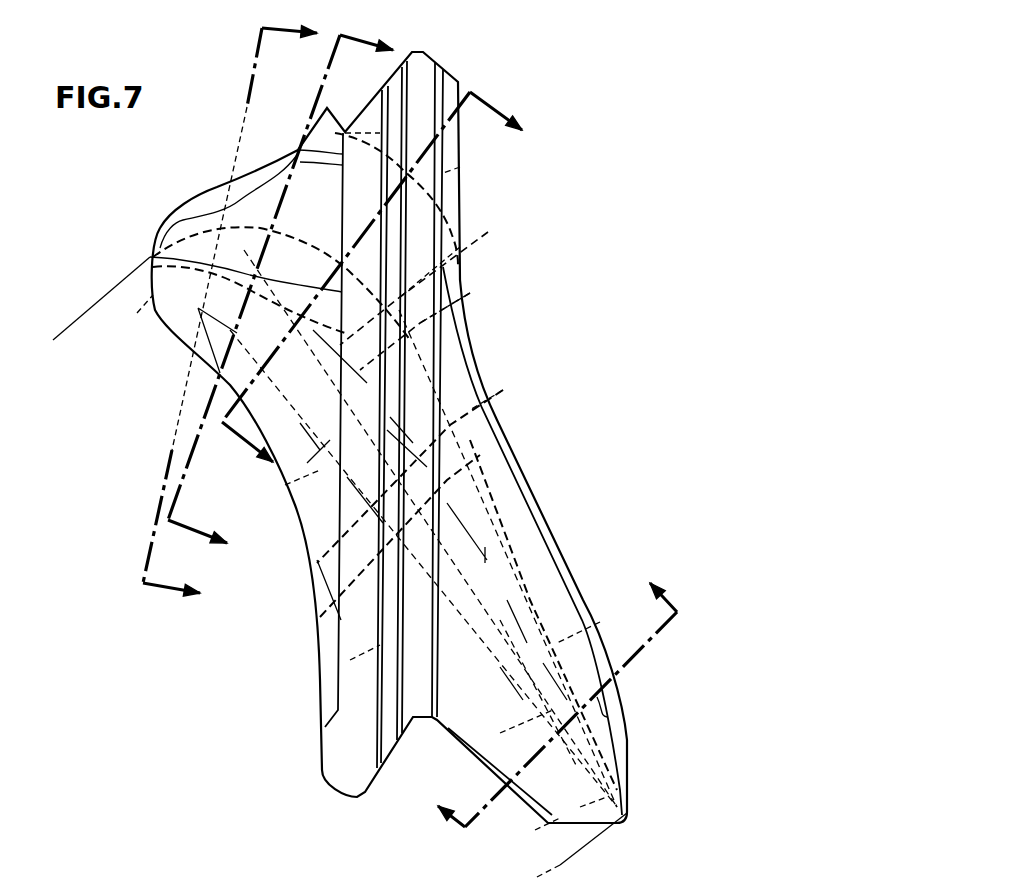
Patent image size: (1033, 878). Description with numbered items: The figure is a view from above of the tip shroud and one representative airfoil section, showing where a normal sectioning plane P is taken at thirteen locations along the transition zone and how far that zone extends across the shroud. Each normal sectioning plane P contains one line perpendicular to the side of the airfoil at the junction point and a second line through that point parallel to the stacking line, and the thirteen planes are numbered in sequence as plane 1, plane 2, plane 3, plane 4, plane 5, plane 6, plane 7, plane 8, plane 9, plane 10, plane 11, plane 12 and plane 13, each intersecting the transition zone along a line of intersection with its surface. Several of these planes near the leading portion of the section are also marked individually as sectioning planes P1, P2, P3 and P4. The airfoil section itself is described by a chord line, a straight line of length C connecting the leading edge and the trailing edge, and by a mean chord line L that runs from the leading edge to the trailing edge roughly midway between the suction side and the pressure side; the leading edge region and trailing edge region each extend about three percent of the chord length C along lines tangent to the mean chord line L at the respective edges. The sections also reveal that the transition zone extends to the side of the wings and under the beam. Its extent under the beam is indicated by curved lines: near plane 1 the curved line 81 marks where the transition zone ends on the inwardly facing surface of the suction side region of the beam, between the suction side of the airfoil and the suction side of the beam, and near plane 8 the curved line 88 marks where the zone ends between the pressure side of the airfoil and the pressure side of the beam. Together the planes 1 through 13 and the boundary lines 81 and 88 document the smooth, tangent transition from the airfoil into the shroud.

The normal sectioning plane 1 is at (398, 160).
The normal sectioning plane 2 is at (460, 247).
The normal sectioning plane 3 is at (470, 293).
The normal sectioning plane 4 is at (503, 390).
The normal sectioning plane 5 is at (600, 622).
The normal sectioning plane 6 is at (535, 830).
The normal sectioning plane 7 is at (455, 765).
The normal sectioning plane 8 is at (295, 637).
The normal sectioning plane 9 is at (285, 581).
The normal sectioning plane 10 is at (243, 445).
The normal sectioning plane 11 is at (428, 609).
The normal sectioning plane 12 is at (205, 288).
The normal sectioning plane 13 is at (198, 213).
The transition zone boundary line under beam at suction side 81 is at (460, 167).
The transition zone boundary line under beam at pressure side 88 is at (350, 660).
The chord line length C is at (285, 485).
The mean chord line L is at (483, 557).
The normal sectioning plane P is at (556, 877).
The normal sectioning plane P1 is at (342, 247).
The normal sectioning plane P2 is at (477, 237).
The normal sectioning plane P3 is at (480, 293).
The normal sectioning plane P4 is at (507, 390).